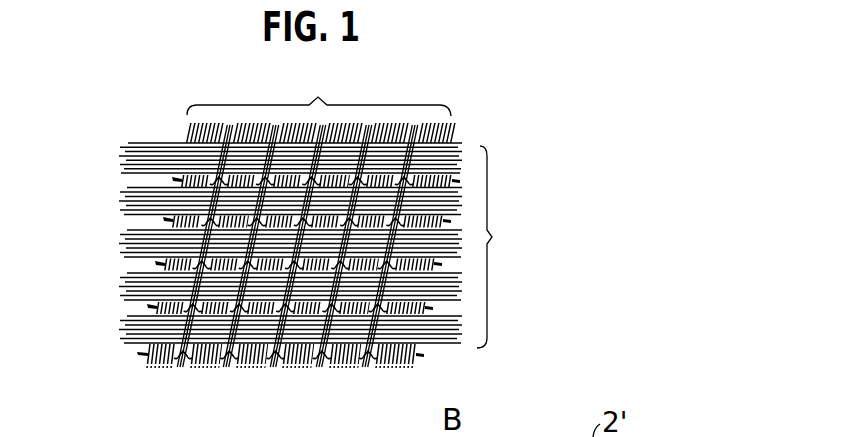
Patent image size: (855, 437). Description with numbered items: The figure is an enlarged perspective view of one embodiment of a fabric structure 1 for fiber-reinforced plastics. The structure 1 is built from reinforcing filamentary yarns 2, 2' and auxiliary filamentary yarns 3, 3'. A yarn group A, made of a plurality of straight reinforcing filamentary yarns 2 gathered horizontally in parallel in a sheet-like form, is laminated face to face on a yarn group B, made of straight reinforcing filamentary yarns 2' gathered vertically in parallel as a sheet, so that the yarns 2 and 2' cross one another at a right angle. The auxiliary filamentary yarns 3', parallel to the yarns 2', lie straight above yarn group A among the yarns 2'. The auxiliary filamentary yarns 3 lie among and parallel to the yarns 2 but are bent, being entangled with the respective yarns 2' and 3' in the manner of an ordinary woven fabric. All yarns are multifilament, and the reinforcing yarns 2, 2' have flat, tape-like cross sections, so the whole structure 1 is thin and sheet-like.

The fabric structure for FRP 1 is at (178, 126).
The reinforcing filamentary yarns 2 is at (332, 233).
The reinforcing filamentary yarns 2' is at (343, 195).
The auxiliary filamentary yarns 3 is at (235, 370).
The auxiliary filamentary yarns 3' is at (261, 266).
The yarn group A is at (497, 247).
The yarn group B is at (319, 89).